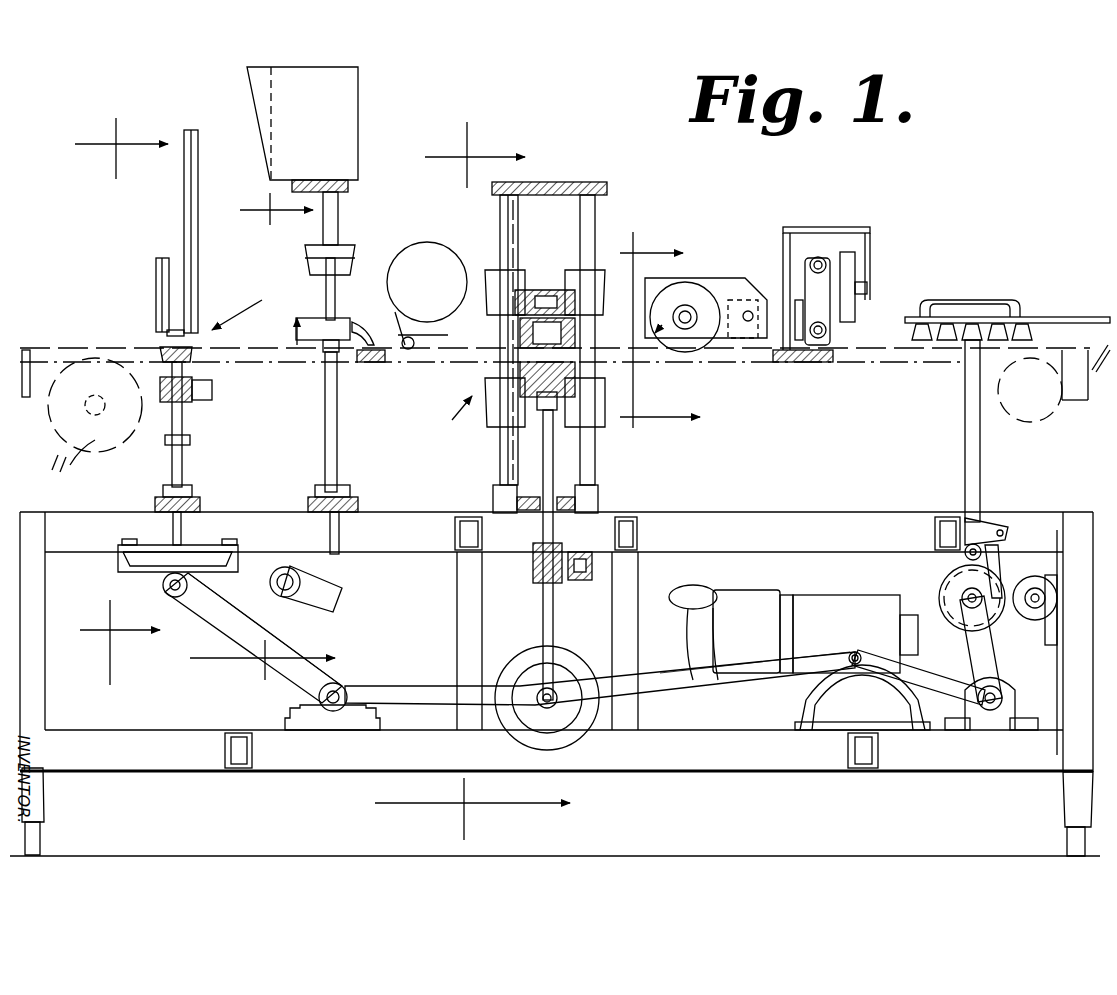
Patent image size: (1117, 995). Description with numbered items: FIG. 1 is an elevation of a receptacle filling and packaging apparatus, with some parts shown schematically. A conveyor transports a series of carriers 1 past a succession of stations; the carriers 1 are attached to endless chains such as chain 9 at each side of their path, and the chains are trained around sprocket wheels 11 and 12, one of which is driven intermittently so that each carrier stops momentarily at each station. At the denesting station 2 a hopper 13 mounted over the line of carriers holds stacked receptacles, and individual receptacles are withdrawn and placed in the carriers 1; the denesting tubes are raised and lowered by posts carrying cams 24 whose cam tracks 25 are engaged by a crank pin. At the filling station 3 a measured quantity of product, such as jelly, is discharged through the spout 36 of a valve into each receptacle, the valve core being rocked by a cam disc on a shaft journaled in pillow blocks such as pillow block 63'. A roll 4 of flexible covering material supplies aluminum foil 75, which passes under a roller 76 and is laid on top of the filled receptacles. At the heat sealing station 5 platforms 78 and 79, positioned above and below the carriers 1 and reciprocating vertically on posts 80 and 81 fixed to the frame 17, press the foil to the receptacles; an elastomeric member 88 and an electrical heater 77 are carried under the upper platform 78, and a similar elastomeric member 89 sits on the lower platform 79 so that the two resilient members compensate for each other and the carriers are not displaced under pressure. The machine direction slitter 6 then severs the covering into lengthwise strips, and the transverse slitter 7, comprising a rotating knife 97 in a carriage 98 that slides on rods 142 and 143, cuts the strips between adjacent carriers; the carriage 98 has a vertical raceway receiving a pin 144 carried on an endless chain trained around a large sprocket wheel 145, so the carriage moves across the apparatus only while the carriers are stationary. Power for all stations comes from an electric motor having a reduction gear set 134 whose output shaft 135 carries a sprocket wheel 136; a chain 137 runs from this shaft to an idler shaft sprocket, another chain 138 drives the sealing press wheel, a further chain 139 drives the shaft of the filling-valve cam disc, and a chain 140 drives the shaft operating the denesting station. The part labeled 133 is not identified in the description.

The carrier 1 is at (382, 366).
The denesting station 2 is at (170, 401).
The filling station 3 is at (262, 444).
The roll of flexible covering material 4 is at (447, 265).
The heat sealing station 5 is at (570, 337).
The machine direction slitter 6 is at (722, 272).
The transverse slitter 7 is at (868, 278).
The endless chain 9 is at (326, 373).
The sprocket wheel 11 is at (91, 420).
The sprocket wheel 12 is at (1050, 405).
The hopper 13 is at (156, 298).
The frame 17 is at (762, 522).
The cam 24 is at (118, 562).
The cam track 25 is at (124, 572).
The spout 36 is at (372, 322).
The pillow block 63' is at (480, 697).
The aluminum foil 75 is at (437, 331).
The roller 76 is at (412, 350).
The electrical heater 77 is at (576, 334).
The platform 78 is at (582, 286).
The platform 79 is at (636, 396).
The post 80 is at (516, 240).
The post 81 is at (594, 220).
The elastomeric member 88 is at (572, 315).
The elastomeric member 89 is at (600, 378).
The knife 97 is at (830, 342).
The carriage 98 is at (838, 258).
The control handle 133 is at (752, 592).
The reduction gear set 134 is at (836, 604).
The output shaft 135 is at (858, 652).
The sprocket wheel 136 is at (860, 682).
The chain 137 is at (920, 678).
The chain 138 is at (688, 700).
The chain 139 is at (400, 690).
The chain 140 is at (262, 638).
The rod 142 is at (818, 257).
The rod 143 is at (840, 323).
The pin 144 is at (860, 310).
The sprocket wheel 145 is at (930, 300).